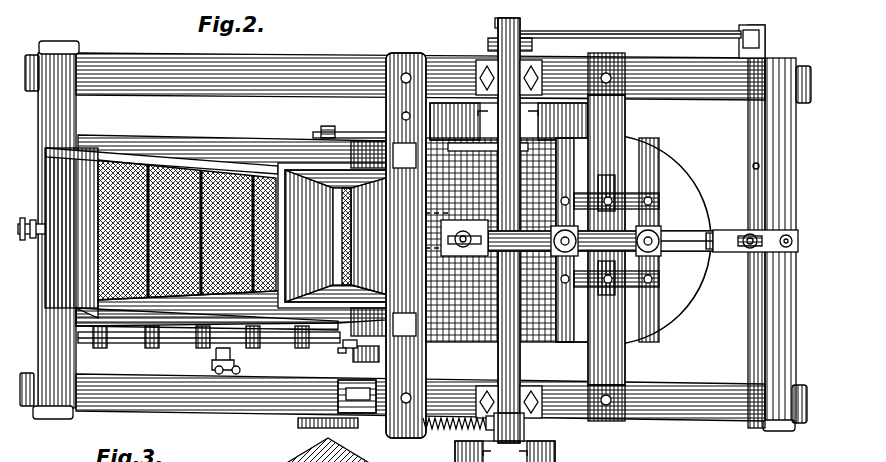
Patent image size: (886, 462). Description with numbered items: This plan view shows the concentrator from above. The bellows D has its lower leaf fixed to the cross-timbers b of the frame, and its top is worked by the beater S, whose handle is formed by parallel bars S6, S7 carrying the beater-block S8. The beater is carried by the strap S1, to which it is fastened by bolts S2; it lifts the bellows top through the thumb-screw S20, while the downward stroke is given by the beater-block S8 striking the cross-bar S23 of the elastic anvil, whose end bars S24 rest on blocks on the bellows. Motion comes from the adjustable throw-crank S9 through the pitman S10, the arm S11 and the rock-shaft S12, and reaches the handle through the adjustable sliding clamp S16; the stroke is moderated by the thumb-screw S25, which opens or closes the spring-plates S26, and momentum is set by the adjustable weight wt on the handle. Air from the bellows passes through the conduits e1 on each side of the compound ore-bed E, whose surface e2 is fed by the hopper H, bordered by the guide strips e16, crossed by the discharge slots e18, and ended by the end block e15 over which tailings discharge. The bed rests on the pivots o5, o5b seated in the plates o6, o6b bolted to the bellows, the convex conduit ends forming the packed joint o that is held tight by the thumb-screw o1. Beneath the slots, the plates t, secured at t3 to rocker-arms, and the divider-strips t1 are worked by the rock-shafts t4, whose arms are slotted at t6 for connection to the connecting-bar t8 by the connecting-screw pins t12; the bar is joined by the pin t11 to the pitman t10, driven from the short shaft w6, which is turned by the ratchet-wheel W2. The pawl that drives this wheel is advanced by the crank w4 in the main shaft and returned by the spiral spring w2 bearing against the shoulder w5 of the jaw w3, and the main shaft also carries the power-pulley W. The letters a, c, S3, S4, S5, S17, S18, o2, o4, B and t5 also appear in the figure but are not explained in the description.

The left frame post a is at (49, 230).
The right frame post c is at (787, 244).
The beater S is at (412, 330).
The strap S1 is at (404, 324).
The bolts S2 is at (451, 271).
The shaft block S3 is at (464, 235).
The vertical bar S4 is at (549, 195).
The horizontal shaft S5 is at (600, 241).
The parallel bar S6 is at (548, 210).
The parallel bar S7 is at (509, 271).
The beater-block S8 is at (564, 241).
The adjustable throw-crank S9 is at (488, 14).
The pitman S10 is at (627, 23).
The arm S11 is at (757, 33).
The rock-shaft S12 is at (746, 142).
The adjustable sliding clamp S16 is at (667, 240).
The shaft extension S17 is at (687, 241).
The collar S18 is at (650, 224).
The thumb-screw S20 is at (545, 240).
The cross-bar S23 is at (592, 188).
The end bars of elastic anvil S24 is at (616, 186).
The thumb-screw S25 is at (738, 226).
The spring-plates S26 is at (722, 244).
The power-pulley W is at (509, 282).
The ratchet-wheel W2 is at (302, 411).
The spiral spring w2 is at (425, 422).
The jaw of pawl w3 is at (480, 420).
The crank w4 is at (518, 421).
The shoulder w5 is at (498, 408).
The short shaft w6 is at (357, 396).
The adjustable weight wt is at (457, 240).
The bellows D is at (568, 240).
The hopper H is at (349, 235).
The compound ore-bed E is at (187, 230).
The air conduits e1 is at (218, 140).
The surface of ore-bed e2 is at (346, 232).
The end block e15 is at (71, 228).
The strips e16 is at (190, 268).
The discharge slots e18 is at (153, 153).
The joint o is at (348, 124).
The thumb-screw o1 is at (15, 214).
The shaft collar o2 is at (15, 232).
The lever o4 is at (340, 345).
The pivot o5 is at (320, 118).
The pivot o5b is at (340, 343).
The plate o6 is at (372, 124).
The plate o6b is at (292, 412).
The cross bar B is at (606, 237).
The cross-timbers b is at (403, 363).
The plates t is at (209, 337).
The divider-strips t1 is at (207, 317).
The securing point t3 is at (361, 350).
The rock-shafts t4 is at (252, 337).
The rod block t5 is at (140, 337).
The slot t6 is at (92, 336).
The connecting-bar t8 is at (171, 357).
The pitman t10 is at (278, 363).
The pin t11 is at (206, 358).
The connecting-screw pins t12 is at (140, 359).